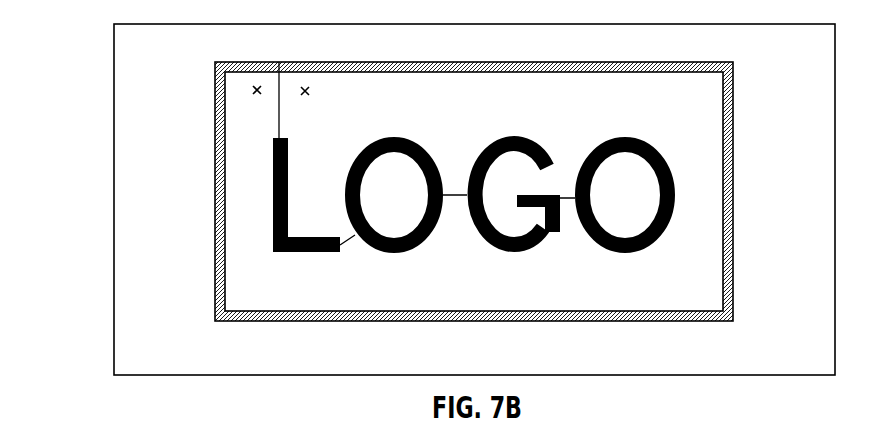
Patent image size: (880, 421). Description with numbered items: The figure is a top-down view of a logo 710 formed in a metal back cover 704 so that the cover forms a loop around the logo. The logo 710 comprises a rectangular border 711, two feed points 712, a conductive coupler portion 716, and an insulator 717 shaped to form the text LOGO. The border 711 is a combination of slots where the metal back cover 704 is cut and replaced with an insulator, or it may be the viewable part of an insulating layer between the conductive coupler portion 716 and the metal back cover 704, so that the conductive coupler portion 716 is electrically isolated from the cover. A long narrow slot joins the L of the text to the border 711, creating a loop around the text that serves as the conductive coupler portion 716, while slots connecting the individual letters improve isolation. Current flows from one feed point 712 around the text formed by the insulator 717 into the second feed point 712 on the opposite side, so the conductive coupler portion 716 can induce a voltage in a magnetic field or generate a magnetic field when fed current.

The metal back cover 704 is at (113, 52).
The logo 710 is at (213, 59).
The rectangular border 711 is at (215, 75).
The feed points 712 is at (305, 89).
The conductive coupler portion 716 is at (243, 297).
The insulator 717 is at (275, 156).